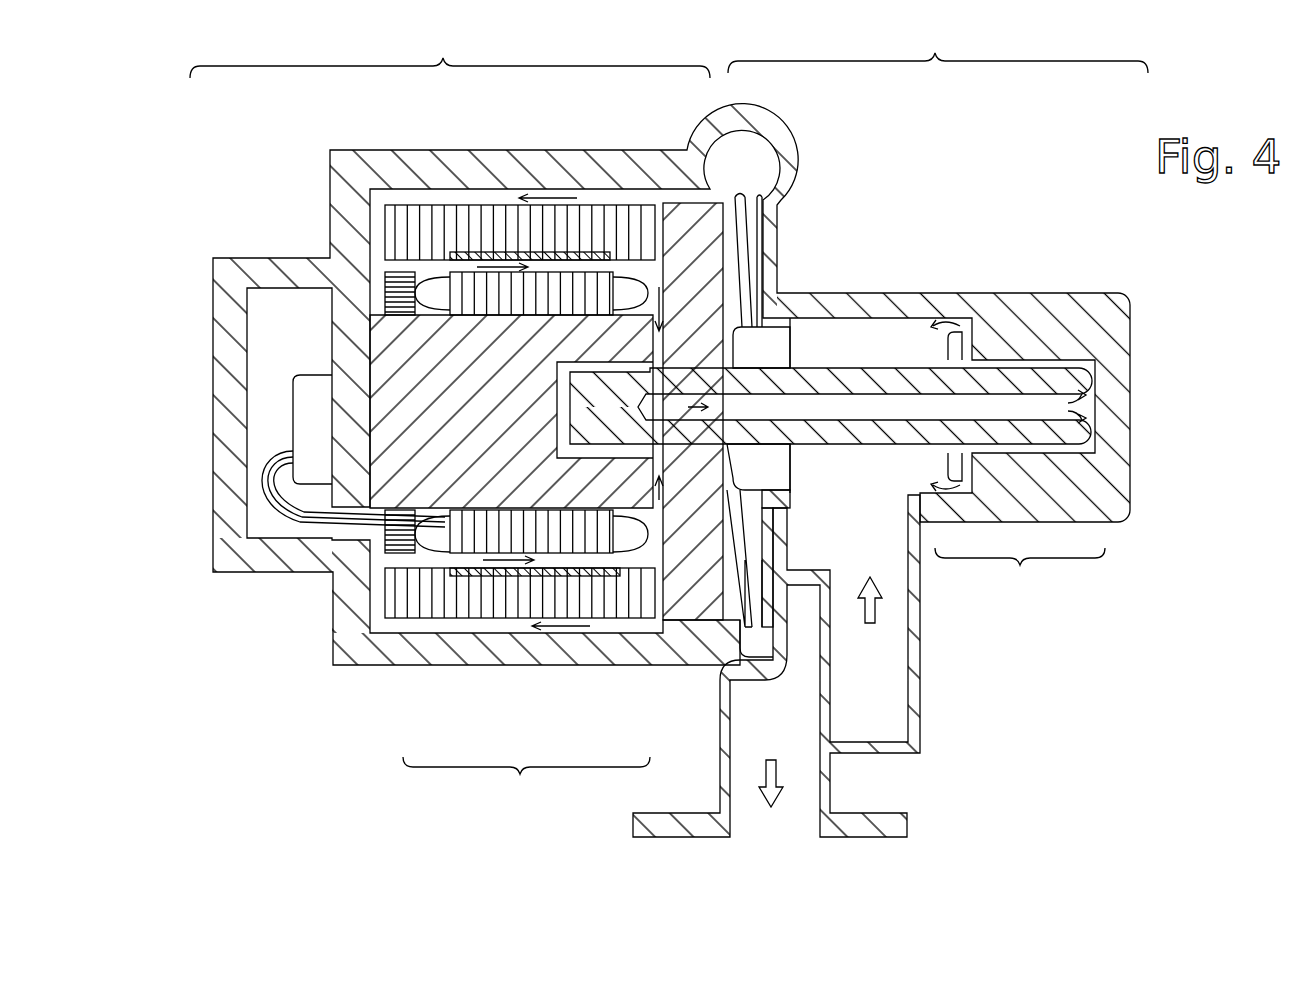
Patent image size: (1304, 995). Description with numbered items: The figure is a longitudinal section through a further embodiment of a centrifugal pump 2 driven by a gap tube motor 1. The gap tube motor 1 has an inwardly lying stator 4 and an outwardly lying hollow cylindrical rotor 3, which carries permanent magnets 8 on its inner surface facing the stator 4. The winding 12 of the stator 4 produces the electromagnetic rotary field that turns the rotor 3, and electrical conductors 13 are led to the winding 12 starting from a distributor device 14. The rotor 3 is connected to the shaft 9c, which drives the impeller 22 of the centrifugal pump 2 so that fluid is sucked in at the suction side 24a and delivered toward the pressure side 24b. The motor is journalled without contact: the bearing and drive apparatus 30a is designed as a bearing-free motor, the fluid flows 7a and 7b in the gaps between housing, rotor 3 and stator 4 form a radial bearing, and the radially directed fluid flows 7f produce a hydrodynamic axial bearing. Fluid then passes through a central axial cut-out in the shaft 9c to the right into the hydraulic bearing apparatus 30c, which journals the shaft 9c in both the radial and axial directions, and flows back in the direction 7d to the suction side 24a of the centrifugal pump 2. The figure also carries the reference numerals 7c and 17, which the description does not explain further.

The gap tube motor 1 is at (450, 45).
The centrifugal pump 2 is at (938, 41).
The rotor 3 is at (446, 220).
The stator 4 is at (382, 352).
The fluid flow direction 7a is at (553, 197).
The fluid flow direction 7b is at (486, 265).
The radial passage 7c is at (955, 318).
The fluid flow direction 7d is at (1093, 397).
The fluid flows 7f is at (660, 307).
The permanent magnets 8 is at (582, 243).
The shaft 9c is at (878, 365).
The winding 12 is at (392, 578).
The electrical conductors 13 is at (293, 517).
The distributor device 14 is at (305, 398).
The winding head 17 is at (462, 543).
The impeller 22 is at (745, 230).
The suction side 24a is at (877, 610).
The pressure side 24b is at (763, 798).
The bearing and drive apparatus 30a is at (526, 786).
The hydraulic bearing apparatus 30c is at (1020, 577).